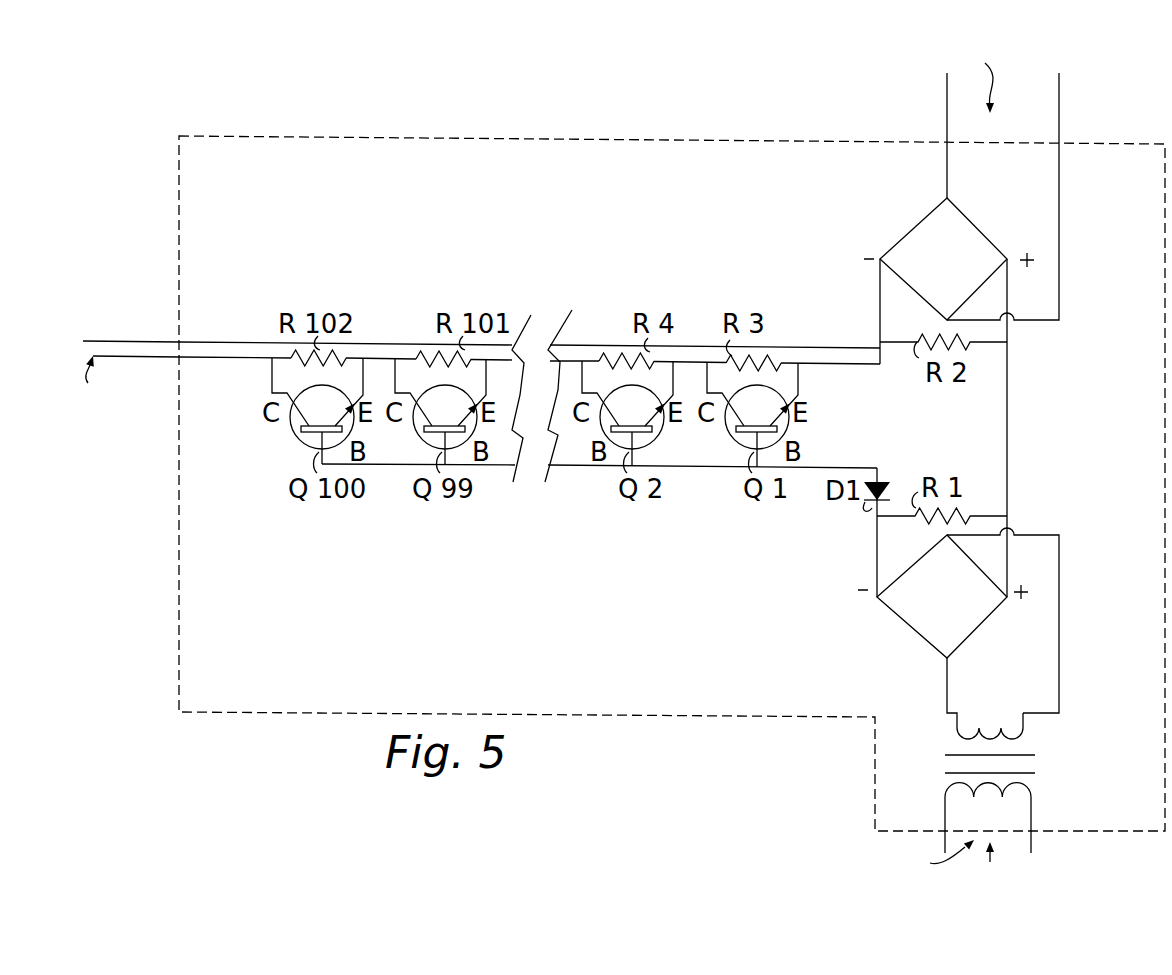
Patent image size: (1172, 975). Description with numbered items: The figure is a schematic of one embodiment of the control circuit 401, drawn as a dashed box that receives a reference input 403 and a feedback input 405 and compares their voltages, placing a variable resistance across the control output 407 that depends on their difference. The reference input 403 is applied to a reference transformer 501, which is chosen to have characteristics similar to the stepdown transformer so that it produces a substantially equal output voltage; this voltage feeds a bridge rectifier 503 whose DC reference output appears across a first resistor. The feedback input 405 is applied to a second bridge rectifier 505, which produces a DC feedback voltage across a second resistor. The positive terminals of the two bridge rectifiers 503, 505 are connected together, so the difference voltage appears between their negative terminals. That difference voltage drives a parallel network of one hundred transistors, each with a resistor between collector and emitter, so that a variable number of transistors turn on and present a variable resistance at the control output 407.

The control circuit 401 is at (470, 148).
The reference input 403 is at (1044, 841).
The feedback input 405 is at (934, 133).
The control output 407 is at (172, 333).
The reference transformer 501 is at (934, 763).
The bridge rectifier 503 is at (893, 603).
The bridge rectifier 505 is at (898, 244).